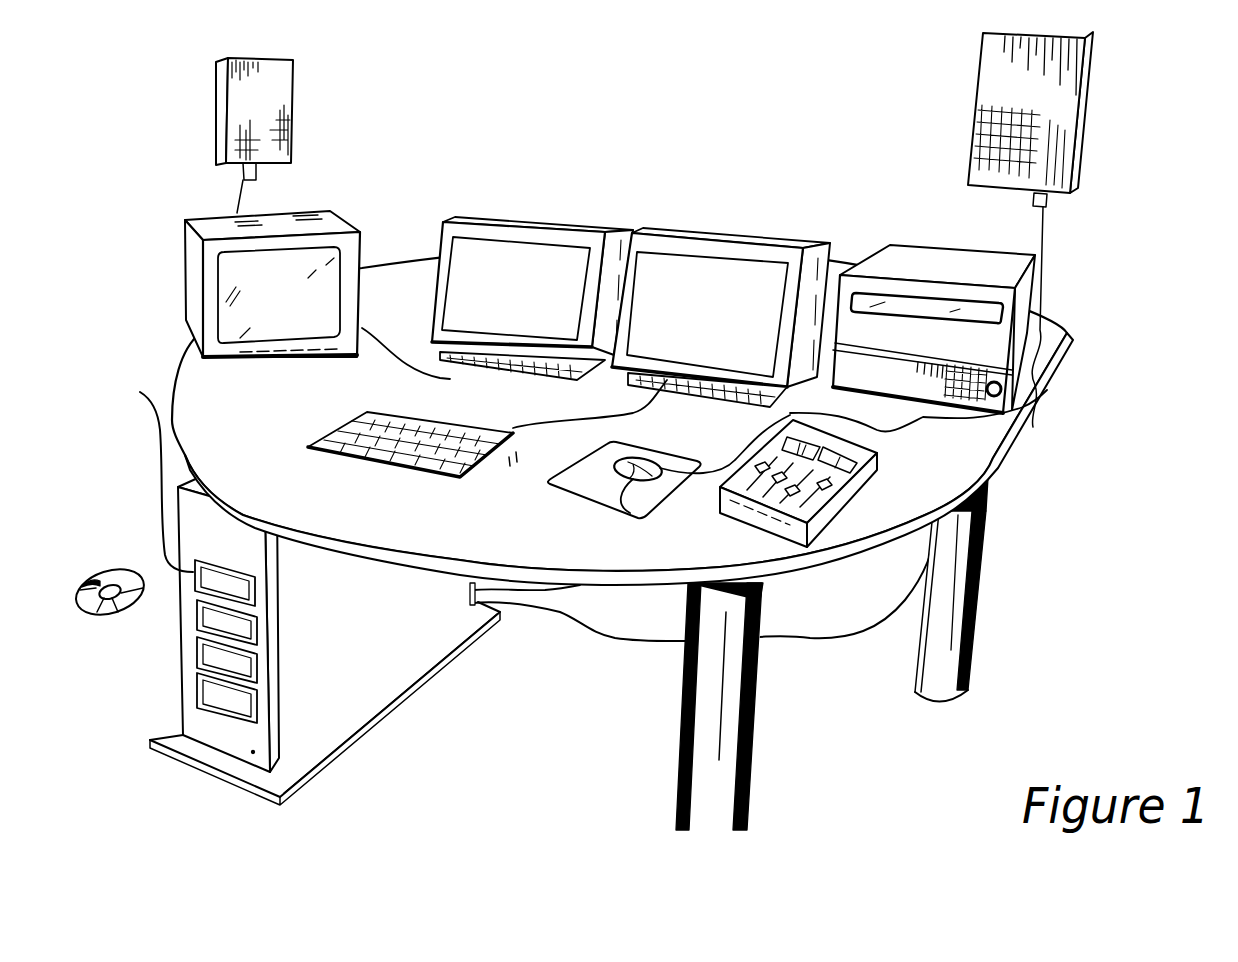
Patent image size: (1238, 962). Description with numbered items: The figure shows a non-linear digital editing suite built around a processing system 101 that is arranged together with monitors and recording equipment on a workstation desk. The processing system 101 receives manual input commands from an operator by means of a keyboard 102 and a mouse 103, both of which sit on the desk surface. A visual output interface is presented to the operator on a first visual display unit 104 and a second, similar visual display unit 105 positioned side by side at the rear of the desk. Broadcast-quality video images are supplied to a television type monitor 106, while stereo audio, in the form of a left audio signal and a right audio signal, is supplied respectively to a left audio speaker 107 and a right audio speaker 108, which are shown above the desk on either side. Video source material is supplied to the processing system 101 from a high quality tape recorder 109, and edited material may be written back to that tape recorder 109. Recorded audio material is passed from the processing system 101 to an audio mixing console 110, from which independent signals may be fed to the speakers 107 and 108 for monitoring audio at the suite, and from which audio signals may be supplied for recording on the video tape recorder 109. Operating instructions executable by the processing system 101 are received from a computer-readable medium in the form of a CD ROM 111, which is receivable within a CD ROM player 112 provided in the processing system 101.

The processing system 101 is at (373, 663).
The keyboard 102 is at (350, 430).
The mouse 103 is at (626, 514).
The first visual display unit 104 is at (530, 233).
The second visual display unit 105 is at (707, 247).
The television type monitor 106 is at (327, 231).
The left audio speaker 107 is at (283, 80).
The right audio speaker 108 is at (1060, 102).
The tape recorder 109 is at (1025, 298).
The audio mixing console 110 is at (850, 488).
The CD ROM 111 is at (113, 571).
The CD ROM player 112 is at (144, 473).